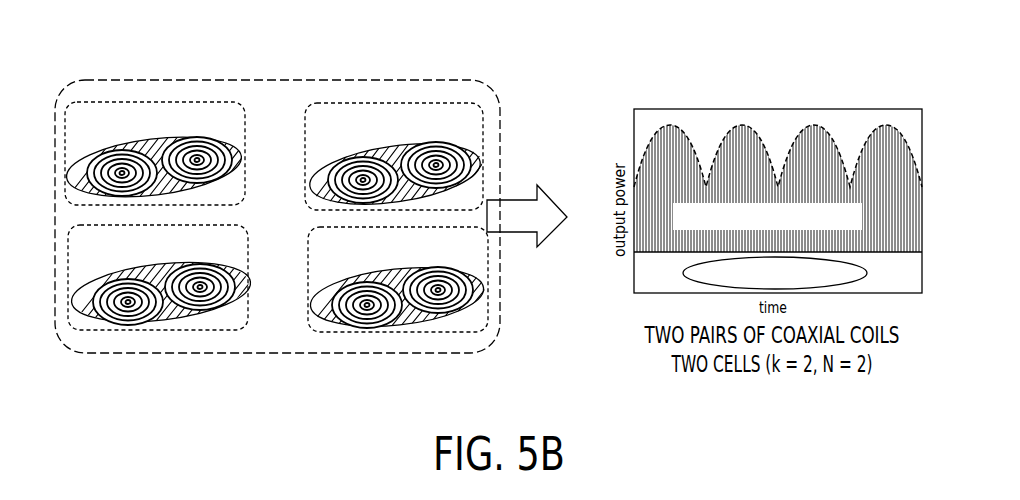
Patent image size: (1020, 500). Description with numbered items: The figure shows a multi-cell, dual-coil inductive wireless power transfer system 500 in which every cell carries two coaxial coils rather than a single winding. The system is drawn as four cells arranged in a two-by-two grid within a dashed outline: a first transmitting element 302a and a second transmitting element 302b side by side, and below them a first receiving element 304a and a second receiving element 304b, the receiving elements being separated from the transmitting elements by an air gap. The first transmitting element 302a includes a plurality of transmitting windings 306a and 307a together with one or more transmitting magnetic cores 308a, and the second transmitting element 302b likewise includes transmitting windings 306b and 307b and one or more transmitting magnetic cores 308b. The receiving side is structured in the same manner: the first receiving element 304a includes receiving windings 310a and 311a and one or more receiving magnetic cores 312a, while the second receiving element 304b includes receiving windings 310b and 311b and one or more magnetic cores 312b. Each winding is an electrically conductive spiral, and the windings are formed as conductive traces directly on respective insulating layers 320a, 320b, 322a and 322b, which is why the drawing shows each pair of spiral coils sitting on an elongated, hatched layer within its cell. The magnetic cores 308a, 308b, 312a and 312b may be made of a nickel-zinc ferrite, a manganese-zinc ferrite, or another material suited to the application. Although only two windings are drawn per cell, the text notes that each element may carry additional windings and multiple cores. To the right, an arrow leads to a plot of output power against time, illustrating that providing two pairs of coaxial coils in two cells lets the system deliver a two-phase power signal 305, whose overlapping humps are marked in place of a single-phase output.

The multi-cell, dual-coil inductive wireless power transfer system 500 is at (103, 79).
The first transmitting element 302a is at (150, 102).
The second transmitting element 302b is at (377, 103).
The first receiving element 304a is at (140, 331).
The second receiving element 304b is at (373, 333).
The transmitting winding 306a is at (86, 181).
The transmitting winding 306b is at (328, 188).
The receiving winding 310a is at (88, 302).
The receiving winding 310b is at (330, 306).
The insulating layer 320a is at (117, 164).
The insulating layer 320b is at (356, 170).
The transmitting winding 307a is at (192, 153).
The transmitting winding 307b is at (432, 156).
The transmitting magnetic core 308a is at (150, 156).
The transmitting magnetic core 308b is at (389, 157).
The insulating layer 322a is at (118, 292).
The insulating layer 322b is at (357, 294).
The receiving magnetic core 312a is at (153, 283).
The receiving magnetic core 312b is at (392, 284).
The receiving winding 311a is at (199, 300).
The receiving winding 311b is at (437, 302).
The multi-phase power signal 305 is at (759, 116).